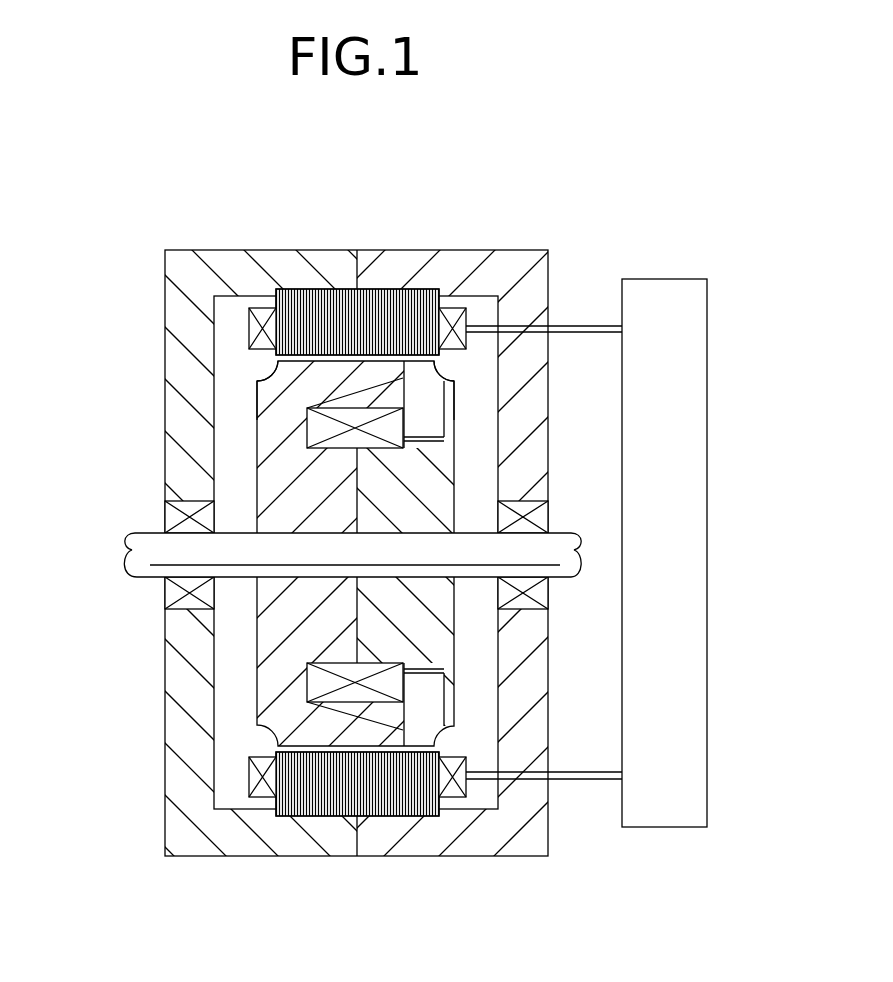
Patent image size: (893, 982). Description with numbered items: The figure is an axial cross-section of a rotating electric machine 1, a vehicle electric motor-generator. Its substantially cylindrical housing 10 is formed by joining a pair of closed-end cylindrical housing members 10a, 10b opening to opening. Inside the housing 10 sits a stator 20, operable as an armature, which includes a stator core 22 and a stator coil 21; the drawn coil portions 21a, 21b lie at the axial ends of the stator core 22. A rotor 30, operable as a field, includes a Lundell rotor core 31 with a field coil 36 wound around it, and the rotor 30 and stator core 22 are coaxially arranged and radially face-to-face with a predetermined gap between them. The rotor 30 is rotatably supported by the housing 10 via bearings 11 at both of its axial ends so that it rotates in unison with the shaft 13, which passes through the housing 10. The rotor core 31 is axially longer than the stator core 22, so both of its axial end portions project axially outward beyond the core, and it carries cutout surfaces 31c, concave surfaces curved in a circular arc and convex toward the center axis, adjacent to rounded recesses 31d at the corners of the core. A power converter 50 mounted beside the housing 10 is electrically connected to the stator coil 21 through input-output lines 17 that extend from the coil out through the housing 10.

The rotating electric machine 1 is at (446, 544).
The housing 10 is at (446, 513).
The housing member 10a is at (333, 265).
The housing member 10b is at (293, 183).
The bearing 11 is at (190, 507).
The shaft 13 is at (155, 545).
The input-output line 17 is at (587, 326).
The stator 20 is at (354, 583).
The stator coil 21 is at (354, 557).
The stator coil 21a is at (455, 325).
The stator coil 21b is at (262, 320).
The stator core 22 is at (322, 807).
The rotor 30 is at (412, 550).
The Lundell rotor core 31 is at (239, 642).
The cutout surface 31c is at (260, 376).
The rotor core recess 31d is at (262, 362).
The field coil 36 is at (310, 680).
The power converter 50 is at (708, 362).